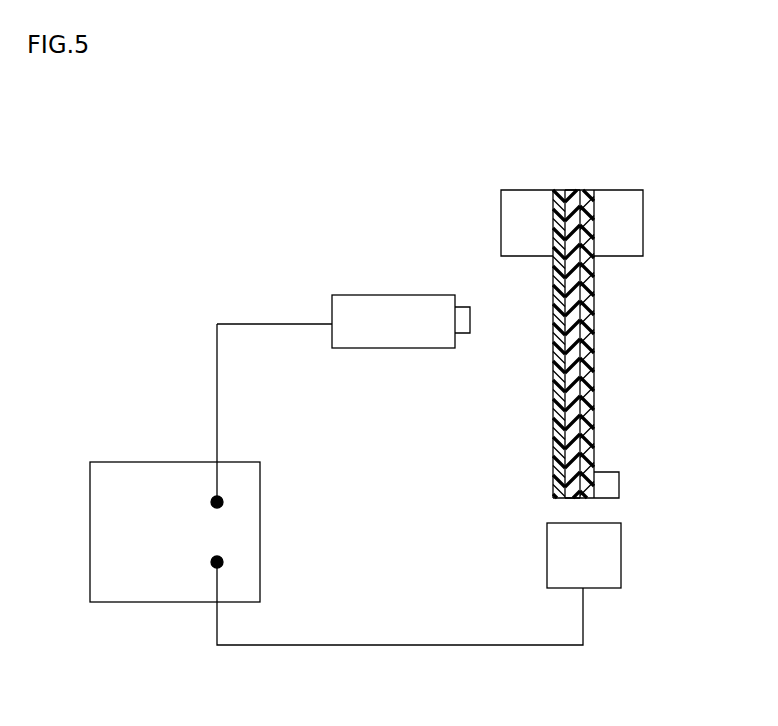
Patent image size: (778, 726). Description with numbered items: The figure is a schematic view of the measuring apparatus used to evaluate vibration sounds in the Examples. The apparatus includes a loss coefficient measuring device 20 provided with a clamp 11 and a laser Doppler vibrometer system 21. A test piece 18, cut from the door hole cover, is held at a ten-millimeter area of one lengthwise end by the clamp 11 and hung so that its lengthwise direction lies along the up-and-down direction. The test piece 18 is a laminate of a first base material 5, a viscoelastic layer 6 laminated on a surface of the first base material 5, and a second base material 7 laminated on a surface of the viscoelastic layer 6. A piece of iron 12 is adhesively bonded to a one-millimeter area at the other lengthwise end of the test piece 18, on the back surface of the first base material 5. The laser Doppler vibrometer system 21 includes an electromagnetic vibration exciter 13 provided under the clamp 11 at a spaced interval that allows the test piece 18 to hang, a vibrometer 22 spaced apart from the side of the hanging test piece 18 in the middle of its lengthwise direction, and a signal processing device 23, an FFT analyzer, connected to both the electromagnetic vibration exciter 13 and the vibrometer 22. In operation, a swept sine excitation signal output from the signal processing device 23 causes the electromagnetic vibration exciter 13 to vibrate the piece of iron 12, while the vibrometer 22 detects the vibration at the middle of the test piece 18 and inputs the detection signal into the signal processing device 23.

The first base material 5 is at (587, 190).
The viscoelastic layer 6 is at (570, 190).
The second base material 7 is at (558, 190).
The clamp 11 is at (517, 190).
The piece of iron 12 is at (607, 472).
The electromagnetic vibration exciter 13 is at (621, 554).
The test piece 18 is at (618, 135).
The loss coefficient measuring device 20 is at (214, 238).
The laser Doppler vibrometer system 21 is at (162, 624).
The vibrometer 22 is at (393, 295).
The signal processing device 23 is at (90, 535).